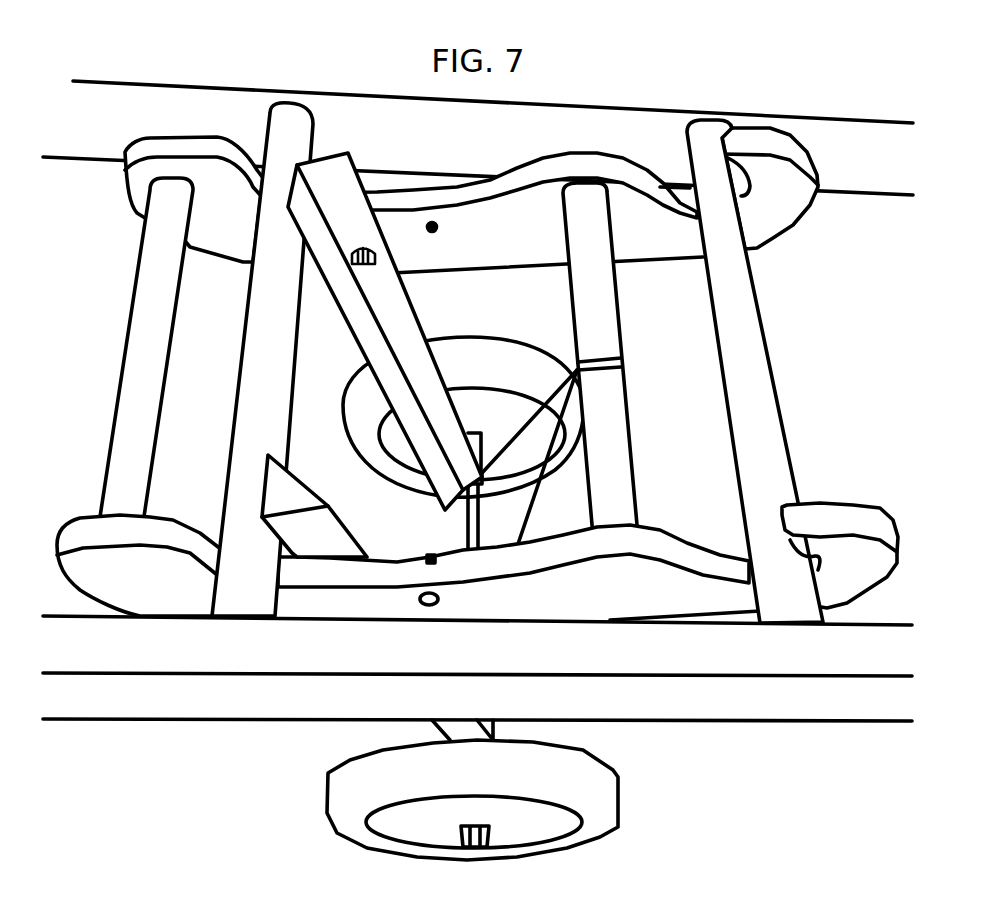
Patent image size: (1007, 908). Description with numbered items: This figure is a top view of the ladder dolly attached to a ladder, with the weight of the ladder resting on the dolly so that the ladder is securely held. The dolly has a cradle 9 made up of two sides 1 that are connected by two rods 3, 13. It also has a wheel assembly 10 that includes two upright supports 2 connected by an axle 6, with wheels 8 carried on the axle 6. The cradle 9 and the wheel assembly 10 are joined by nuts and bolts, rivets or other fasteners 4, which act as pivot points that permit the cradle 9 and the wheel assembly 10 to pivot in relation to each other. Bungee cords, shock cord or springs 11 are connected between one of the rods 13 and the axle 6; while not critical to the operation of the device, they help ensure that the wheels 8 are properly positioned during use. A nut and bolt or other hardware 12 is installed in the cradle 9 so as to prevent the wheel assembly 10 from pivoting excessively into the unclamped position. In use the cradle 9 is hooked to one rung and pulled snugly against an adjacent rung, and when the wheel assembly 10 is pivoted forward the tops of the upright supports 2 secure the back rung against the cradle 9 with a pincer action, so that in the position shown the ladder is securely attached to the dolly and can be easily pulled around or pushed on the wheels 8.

The sides 1 is at (818, 518).
The upright supports 2 is at (297, 483).
The rod 3 is at (178, 202).
The fasteners 4 is at (365, 250).
The axle 6 is at (478, 527).
The wheels 8 is at (498, 353).
The cradle 9 is at (128, 217).
The wheel assembly 10 is at (313, 353).
The springs 11 is at (598, 357).
The hardware 12 is at (432, 227).
The rod 13 is at (583, 218).